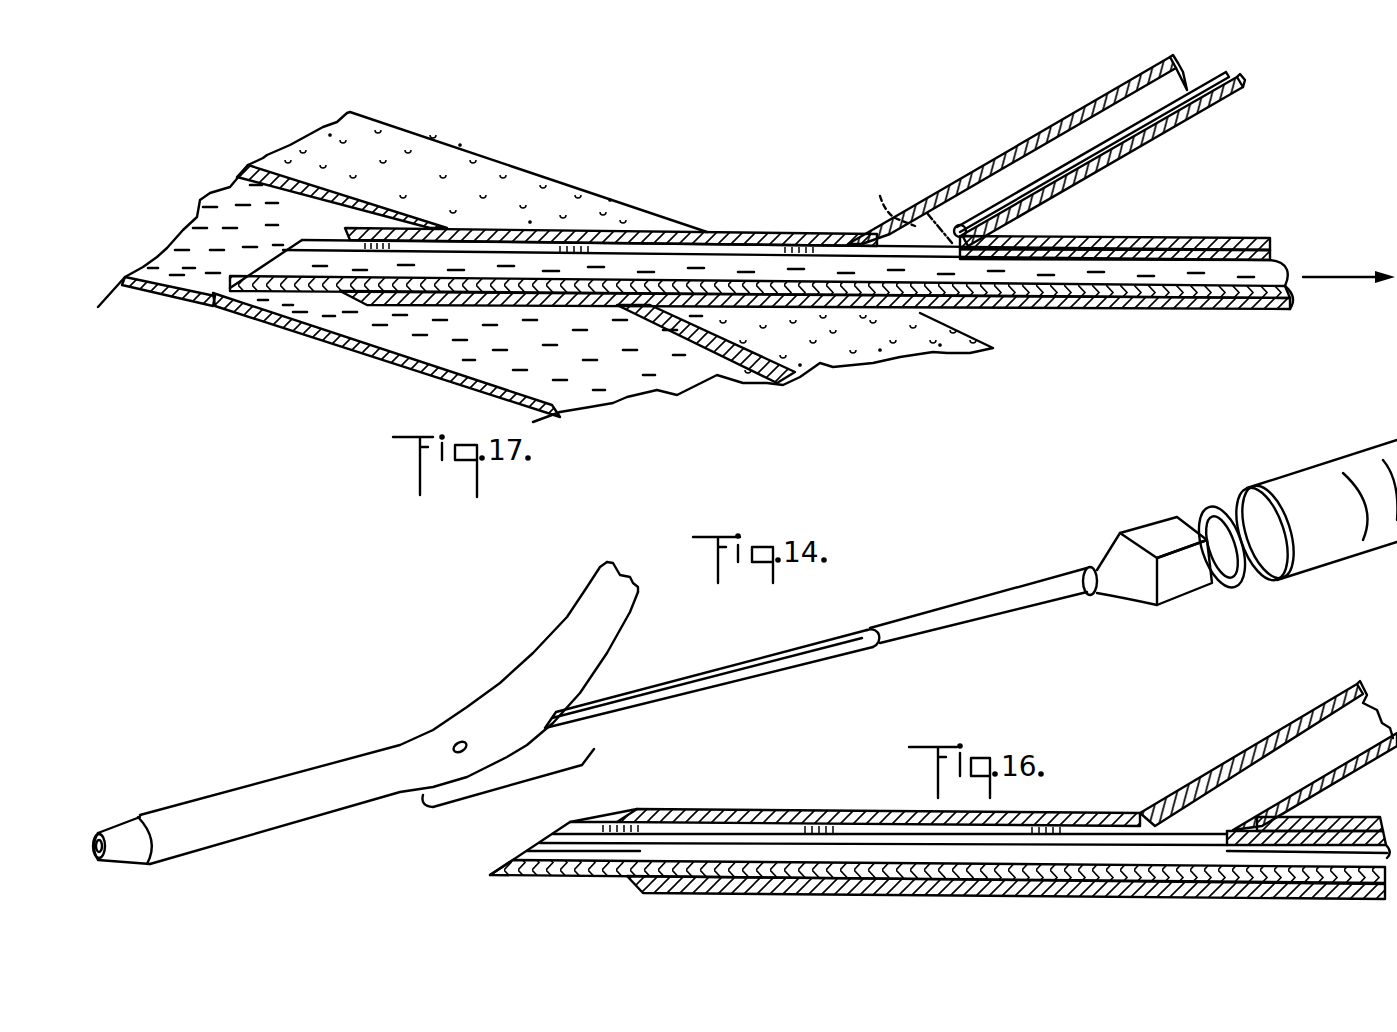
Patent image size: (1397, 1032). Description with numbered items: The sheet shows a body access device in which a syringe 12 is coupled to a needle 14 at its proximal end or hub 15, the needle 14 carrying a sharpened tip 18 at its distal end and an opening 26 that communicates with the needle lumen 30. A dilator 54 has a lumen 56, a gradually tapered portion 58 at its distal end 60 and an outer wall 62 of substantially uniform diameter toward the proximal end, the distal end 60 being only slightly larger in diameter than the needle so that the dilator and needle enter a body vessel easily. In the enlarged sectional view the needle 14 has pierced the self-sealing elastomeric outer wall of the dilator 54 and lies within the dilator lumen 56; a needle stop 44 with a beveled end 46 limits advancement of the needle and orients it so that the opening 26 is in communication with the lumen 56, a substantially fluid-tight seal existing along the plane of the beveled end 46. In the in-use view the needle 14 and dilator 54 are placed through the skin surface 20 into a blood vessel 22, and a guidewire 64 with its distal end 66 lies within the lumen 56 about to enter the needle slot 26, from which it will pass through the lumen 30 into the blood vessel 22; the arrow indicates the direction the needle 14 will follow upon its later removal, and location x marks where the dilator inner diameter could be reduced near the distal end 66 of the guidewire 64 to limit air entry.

In FIG. 14, the syringe 12 is at (1298, 572).
In FIG. 14, the needle 14 is at (735, 682).
In FIG. 16, the needle 14 is at (533, 876).
In FIG. 14, the hub 15 is at (1175, 600).
In FIG. 17, the sharpened tip 18 is at (212, 302).
In FIG. 16, the sharpened tip 18 is at (490, 875).
In FIG. 17, the skin surface 20 is at (558, 180).
In FIG. 17, the blood vessel 22 is at (172, 300).
In FIG. 17, the opening 26 is at (784, 243).
In FIG. 14, the opening 26 is at (680, 682).
In FIG. 16, the opening 26 is at (718, 832).
In FIG. 17, the lumen 30 is at (1197, 268).
In FIG. 16, the lumen 30 is at (854, 848).
In FIG. 17, the needle stop 44 is at (1113, 307).
In FIG. 14, the needle stop 44 is at (990, 603).
In FIG. 16, the needle stop 44 is at (1264, 900).
In FIG. 17, the beveled end 46 is at (898, 325).
In FIG. 14, the beveled end 46 is at (870, 648).
In FIG. 16, the beveled end 46 is at (1149, 900).
In FIG. 17, the dilator 54 is at (622, 228).
In FIG. 14, the dilator 54 is at (420, 655).
In FIG. 16, the dilator 54 is at (1253, 745).
In FIG. 17, the lumen 56 is at (950, 210).
In FIG. 14, the lumen 56 is at (97, 857).
In FIG. 16, the lumen 56 is at (1278, 776).
In FIG. 17, the tapered portion 58 is at (358, 228).
In FIG. 14, the tapered portion 58 is at (121, 864).
In FIG. 16, the tapered portion 58 is at (628, 879).
In FIG. 14, the distal end 60 is at (106, 808).
In FIG. 16, the distal end 60 is at (605, 803).
In FIG. 14, the outer wall 62 is at (282, 820).
In FIG. 17, the guidewire 64 is at (1160, 127).
In FIG. 17, the distal end 66 is at (965, 226).